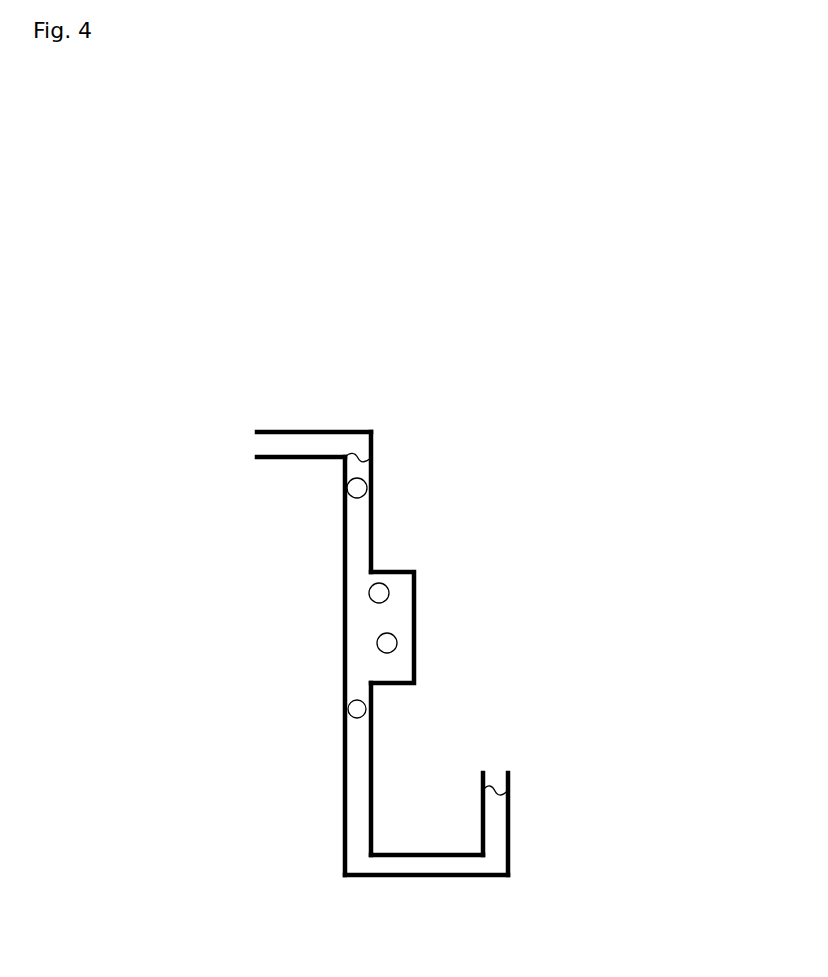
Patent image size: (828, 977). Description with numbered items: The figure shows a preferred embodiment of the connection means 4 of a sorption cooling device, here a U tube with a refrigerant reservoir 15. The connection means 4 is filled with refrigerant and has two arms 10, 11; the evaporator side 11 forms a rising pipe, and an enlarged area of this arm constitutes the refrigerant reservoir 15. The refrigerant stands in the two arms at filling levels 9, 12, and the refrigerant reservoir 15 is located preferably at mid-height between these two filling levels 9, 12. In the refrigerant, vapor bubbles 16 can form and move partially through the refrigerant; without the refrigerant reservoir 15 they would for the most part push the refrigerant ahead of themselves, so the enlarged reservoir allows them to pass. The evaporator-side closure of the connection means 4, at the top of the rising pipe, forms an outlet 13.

The connection means 4 is at (395, 875).
The filling level 9 is at (510, 792).
The arm 10 is at (510, 848).
The evaporator side 11 is at (345, 795).
The filling level 12 is at (373, 458).
The outlet 13 is at (258, 445).
The refrigerant reservoir 15 is at (414, 620).
The vapor bubbles 16 is at (368, 702).